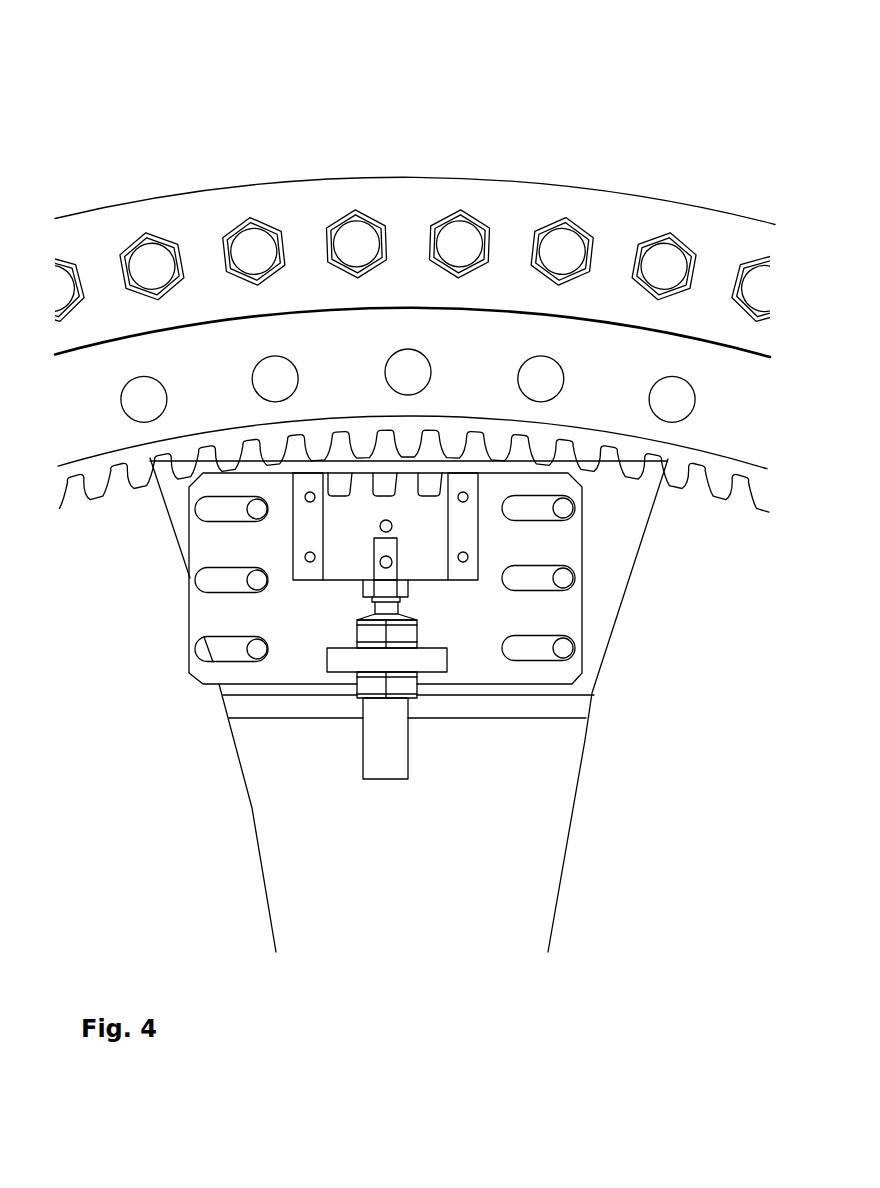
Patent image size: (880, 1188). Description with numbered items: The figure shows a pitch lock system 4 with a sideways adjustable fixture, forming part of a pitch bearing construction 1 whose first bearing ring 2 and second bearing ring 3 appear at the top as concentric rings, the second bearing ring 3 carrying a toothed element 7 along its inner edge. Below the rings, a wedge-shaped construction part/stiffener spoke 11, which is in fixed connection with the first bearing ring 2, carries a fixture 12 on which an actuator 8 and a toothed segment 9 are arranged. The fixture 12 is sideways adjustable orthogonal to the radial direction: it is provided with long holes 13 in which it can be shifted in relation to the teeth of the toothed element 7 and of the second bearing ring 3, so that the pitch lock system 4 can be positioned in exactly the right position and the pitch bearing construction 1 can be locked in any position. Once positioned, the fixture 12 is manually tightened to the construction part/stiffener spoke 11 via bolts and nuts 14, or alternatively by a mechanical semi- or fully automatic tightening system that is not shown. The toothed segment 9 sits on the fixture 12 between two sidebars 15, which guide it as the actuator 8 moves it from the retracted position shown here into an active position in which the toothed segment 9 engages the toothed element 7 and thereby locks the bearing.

The pitch bearing construction 1 is at (137, 88).
The first bearing ring 2 is at (245, 200).
The second bearing ring 3 is at (345, 330).
The pitch lock system 4 is at (660, 670).
The toothed element 7 is at (717, 478).
The actuator 8 is at (393, 755).
The toothed segment 9 is at (426, 550).
The construction part/stiffener spoke 11 is at (535, 866).
The fixture 12 is at (560, 612).
The long holes 13 is at (522, 649).
The bolts and nuts 14 is at (250, 652).
The sidebars 15 is at (303, 530).